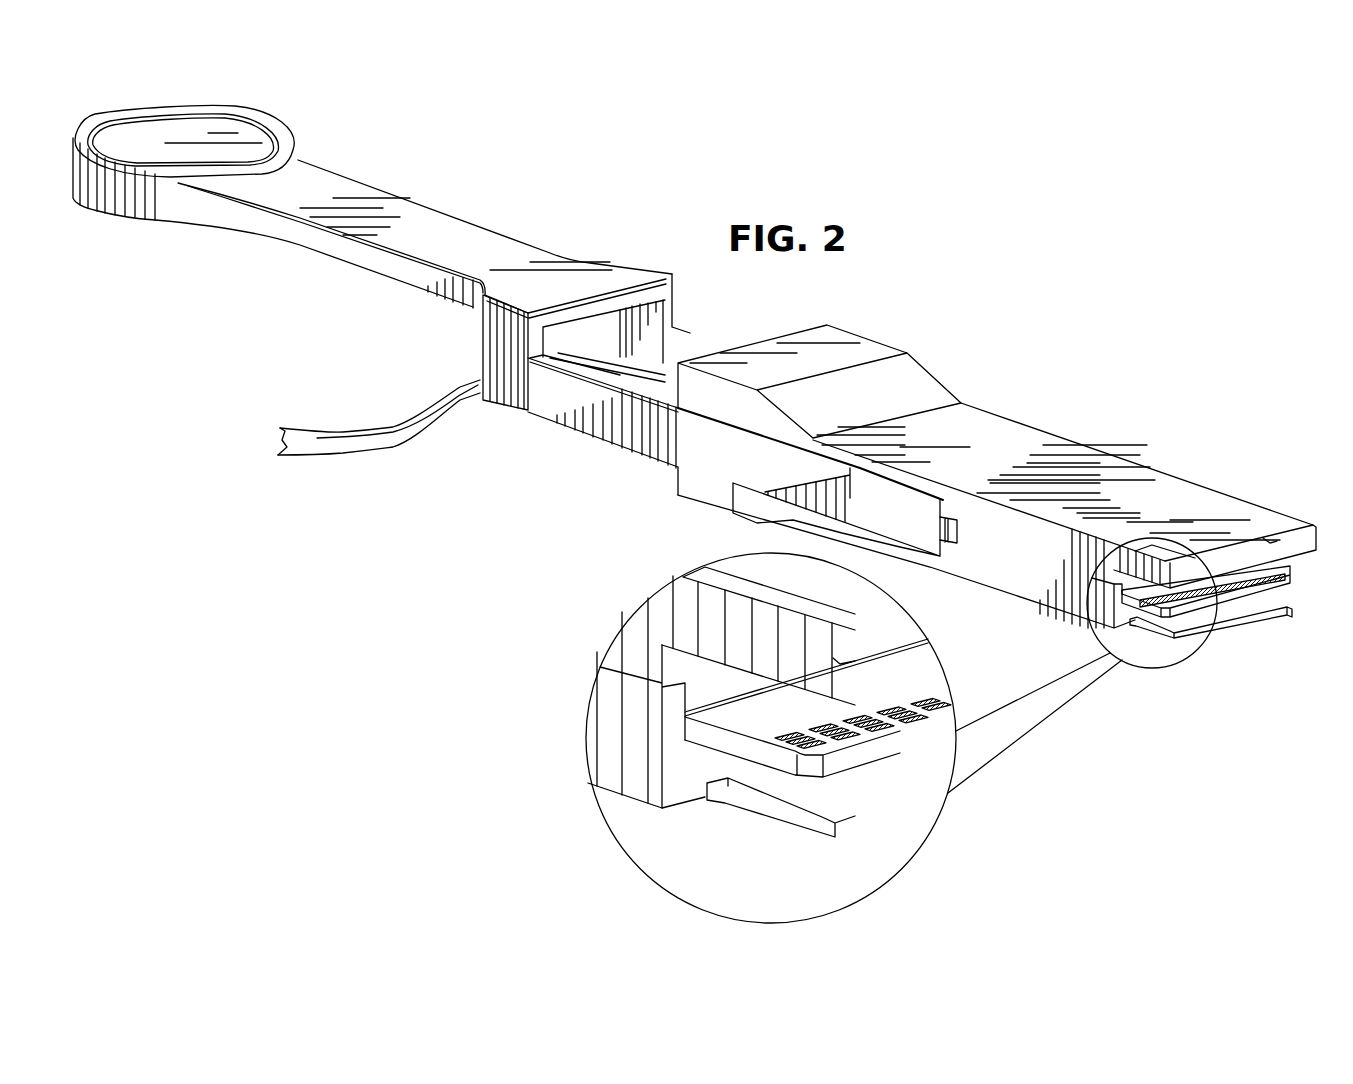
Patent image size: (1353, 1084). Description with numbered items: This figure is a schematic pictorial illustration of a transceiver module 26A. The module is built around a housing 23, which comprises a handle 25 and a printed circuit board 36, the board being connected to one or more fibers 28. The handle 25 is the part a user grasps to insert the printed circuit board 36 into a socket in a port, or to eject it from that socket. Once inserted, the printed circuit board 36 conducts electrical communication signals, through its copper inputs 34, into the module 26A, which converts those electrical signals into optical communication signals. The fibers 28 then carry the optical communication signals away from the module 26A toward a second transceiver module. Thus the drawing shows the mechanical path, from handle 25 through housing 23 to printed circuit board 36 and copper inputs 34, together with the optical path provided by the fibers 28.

The housing 23 is at (616, 435).
The handle 25 is at (443, 232).
The transceiver module 26A is at (973, 316).
The fibers 28 is at (343, 432).
The copper inputs 34 is at (1257, 590).
The printed circuit board (PCB) 36 is at (1190, 607).